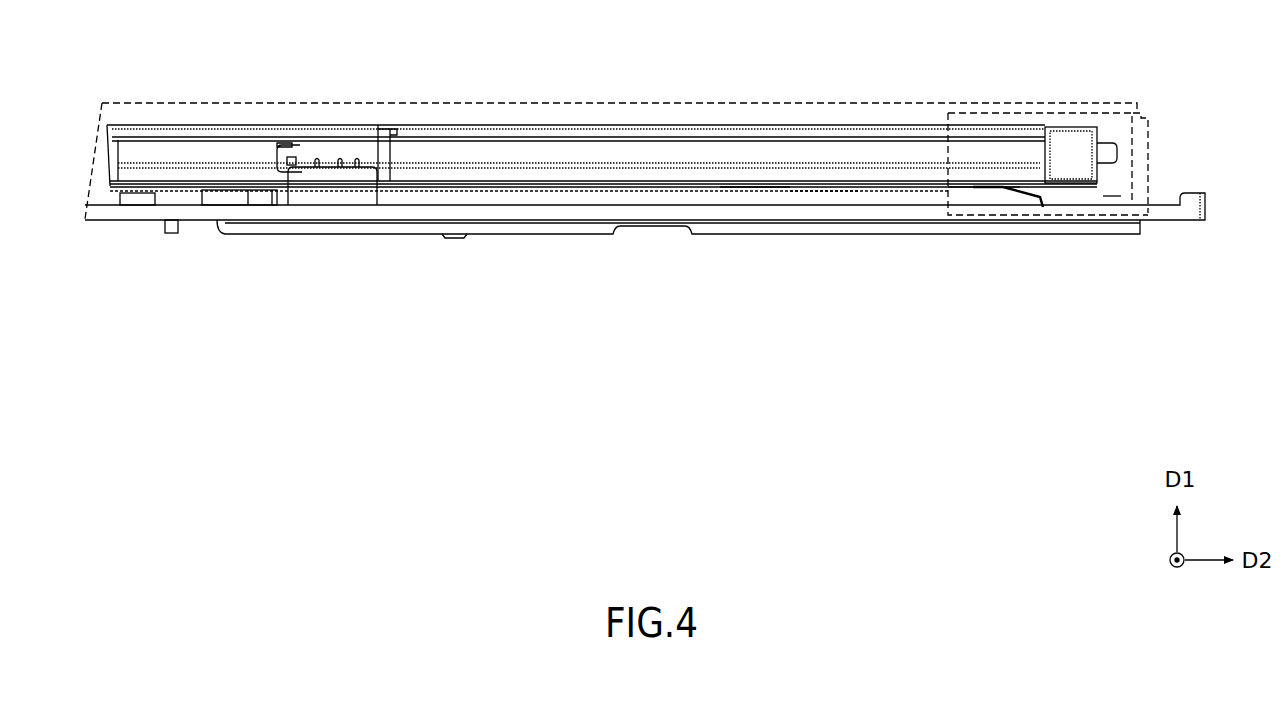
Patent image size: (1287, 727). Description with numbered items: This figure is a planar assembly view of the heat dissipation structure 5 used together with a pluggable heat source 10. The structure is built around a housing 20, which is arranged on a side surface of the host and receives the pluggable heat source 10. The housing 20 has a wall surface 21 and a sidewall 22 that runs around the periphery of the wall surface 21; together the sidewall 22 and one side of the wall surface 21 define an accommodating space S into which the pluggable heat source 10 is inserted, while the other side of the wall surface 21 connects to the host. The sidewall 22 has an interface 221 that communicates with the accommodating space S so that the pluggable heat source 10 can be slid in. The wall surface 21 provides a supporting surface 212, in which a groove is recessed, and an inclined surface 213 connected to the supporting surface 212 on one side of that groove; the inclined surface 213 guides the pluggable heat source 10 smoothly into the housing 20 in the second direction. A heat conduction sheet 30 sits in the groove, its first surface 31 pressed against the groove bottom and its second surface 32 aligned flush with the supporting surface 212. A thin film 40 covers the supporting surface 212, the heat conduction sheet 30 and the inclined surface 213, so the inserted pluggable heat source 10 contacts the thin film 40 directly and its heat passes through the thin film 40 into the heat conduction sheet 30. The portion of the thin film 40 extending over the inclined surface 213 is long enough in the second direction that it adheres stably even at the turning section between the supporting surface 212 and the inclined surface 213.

The electronic device 5 is at (972, 113).
The pluggable heat source 10 is at (149, 122).
The housing 20 is at (1109, 101).
The wall surface 21 is at (178, 210).
The sidewall 22 is at (98, 193).
The interface 221 is at (1153, 123).
The heat conduction sheet 30 is at (852, 190).
The first surface 31 is at (720, 190).
The second surface 32 is at (792, 188).
The supporting surface 212 is at (973, 190).
The inclined surface 213 is at (1013, 190).
The thin film 40 is at (1039, 205).
The accommodating space S is at (1112, 184).